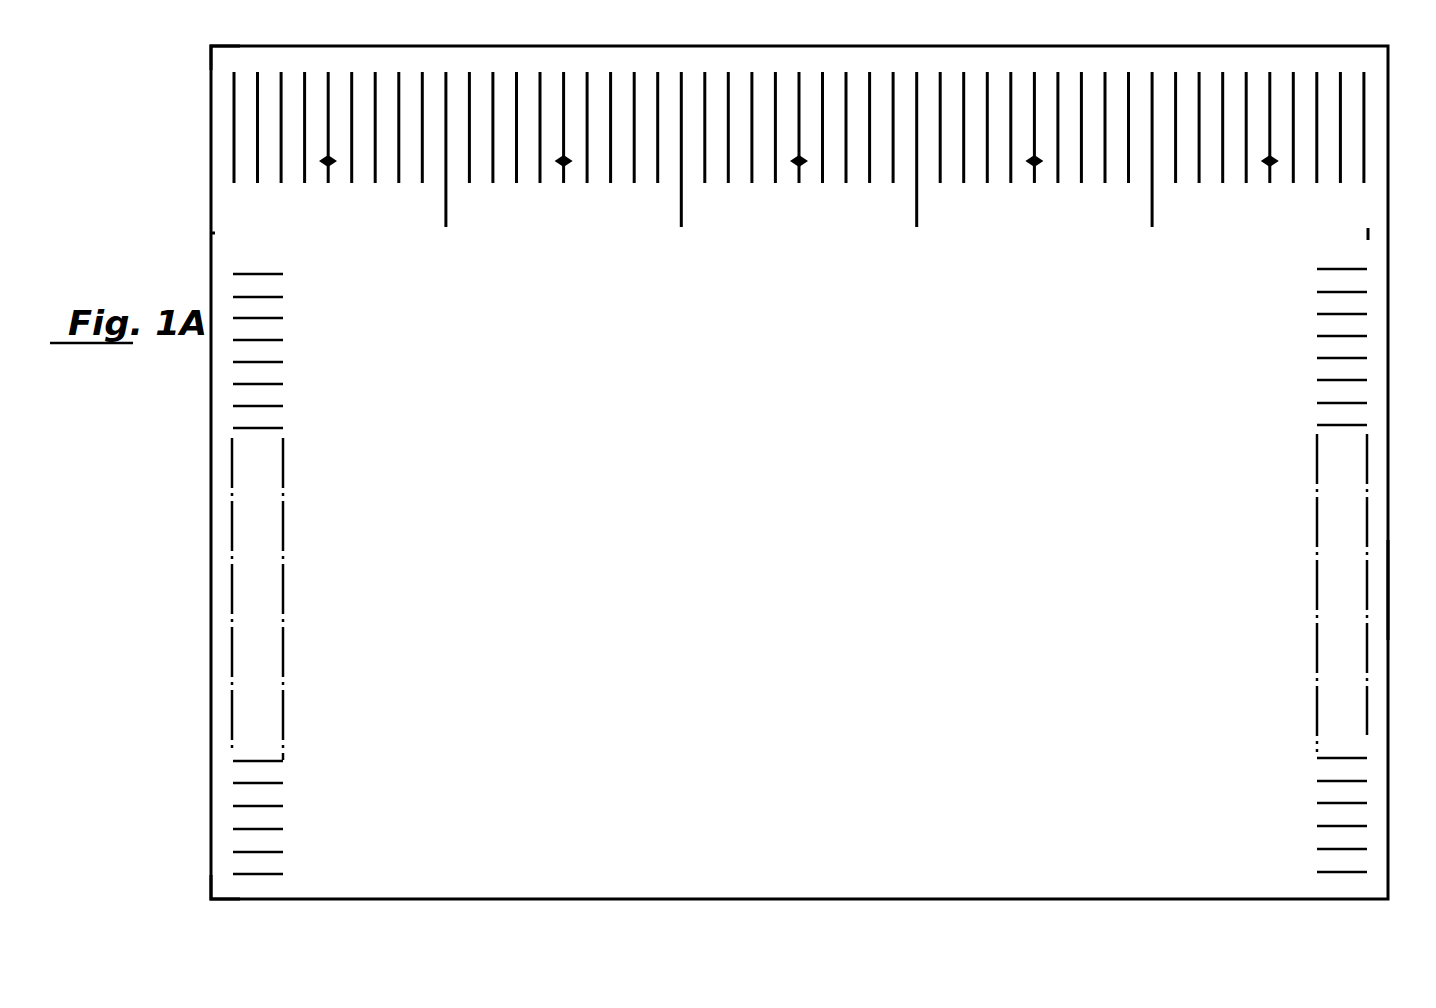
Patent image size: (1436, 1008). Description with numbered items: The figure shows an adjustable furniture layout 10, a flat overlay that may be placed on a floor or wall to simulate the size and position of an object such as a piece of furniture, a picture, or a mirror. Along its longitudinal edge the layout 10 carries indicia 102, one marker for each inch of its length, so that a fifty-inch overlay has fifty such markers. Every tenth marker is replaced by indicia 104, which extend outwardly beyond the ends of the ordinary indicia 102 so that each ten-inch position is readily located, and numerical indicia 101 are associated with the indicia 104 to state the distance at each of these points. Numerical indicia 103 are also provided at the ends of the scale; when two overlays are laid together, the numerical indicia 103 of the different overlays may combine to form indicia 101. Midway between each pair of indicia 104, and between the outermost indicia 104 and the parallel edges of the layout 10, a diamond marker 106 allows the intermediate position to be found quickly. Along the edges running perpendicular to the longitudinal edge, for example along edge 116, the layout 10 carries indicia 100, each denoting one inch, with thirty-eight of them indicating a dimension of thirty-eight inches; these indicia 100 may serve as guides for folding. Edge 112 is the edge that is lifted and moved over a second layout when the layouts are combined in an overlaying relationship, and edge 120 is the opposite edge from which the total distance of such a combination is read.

The adjustable furniture layout 10 is at (185, 500).
The indicia 100 is at (283, 404).
The numerical indicia 101 is at (687, 252).
The indicia 102 is at (258, 184).
The numerical indicia 103 is at (220, 233).
The indicia 104 is at (448, 205).
The diamond marker 106 is at (572, 167).
The edge 112 is at (237, 902).
The edge 116 is at (1390, 615).
The edge 120 is at (240, 48).